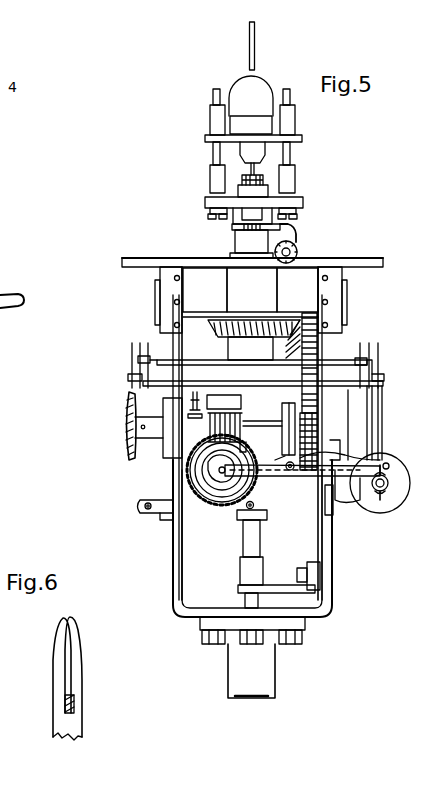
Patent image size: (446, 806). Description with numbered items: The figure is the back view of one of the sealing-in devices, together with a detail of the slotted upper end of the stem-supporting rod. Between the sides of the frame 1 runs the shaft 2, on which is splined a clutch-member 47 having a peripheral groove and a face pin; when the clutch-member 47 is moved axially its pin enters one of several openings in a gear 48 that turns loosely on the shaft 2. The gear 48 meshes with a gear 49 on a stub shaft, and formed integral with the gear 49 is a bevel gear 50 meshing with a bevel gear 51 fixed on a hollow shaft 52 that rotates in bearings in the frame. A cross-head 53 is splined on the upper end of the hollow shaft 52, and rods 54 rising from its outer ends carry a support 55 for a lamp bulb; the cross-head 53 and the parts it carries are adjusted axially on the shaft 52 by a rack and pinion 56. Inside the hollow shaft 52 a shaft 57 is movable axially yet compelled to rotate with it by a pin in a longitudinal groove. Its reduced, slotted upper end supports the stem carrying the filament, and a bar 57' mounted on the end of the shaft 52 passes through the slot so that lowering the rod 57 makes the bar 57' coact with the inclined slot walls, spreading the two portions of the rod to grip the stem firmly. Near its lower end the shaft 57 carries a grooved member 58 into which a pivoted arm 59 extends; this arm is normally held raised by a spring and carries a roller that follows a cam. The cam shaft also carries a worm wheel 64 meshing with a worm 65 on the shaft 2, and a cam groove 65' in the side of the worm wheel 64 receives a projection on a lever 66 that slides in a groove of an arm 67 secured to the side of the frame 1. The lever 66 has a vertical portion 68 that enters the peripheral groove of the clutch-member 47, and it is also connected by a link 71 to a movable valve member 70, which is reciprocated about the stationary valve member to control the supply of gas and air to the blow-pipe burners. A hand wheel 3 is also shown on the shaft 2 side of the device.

In FIG. 5, the frame 1 is at (173, 556).
In FIG. 5, the shaft 2 is at (188, 430).
In FIG. 5, the hand wheel 3 is at (127, 455).
In FIG. 5, the clutch-member 47 is at (282, 430).
In FIG. 5, the gear 48 is at (317, 432).
In FIG. 5, the gear 49 is at (317, 400).
In FIG. 5, the bevel gear 50 is at (290, 400).
In FIG. 5, the bevel gear 51 is at (213, 335).
In FIG. 5, the hollow shaft 52 is at (227, 372).
In FIG. 5, the cross-head 53 is at (238, 213).
In FIG. 5, the rods 54 is at (213, 152).
In FIG. 5, the support 55 is at (302, 138).
In FIG. 5, the rack and pinion 56 is at (296, 243).
In FIG. 5, the shaft 57 is at (231, 396).
In FIG. 6, the shaft 57 is at (88, 678).
In FIG. 5, the bar 57' is at (290, 182).
In FIG. 6, the bar 57' is at (97, 702).
In FIG. 5, the member 58 is at (262, 513).
In FIG. 5, the pivoted arm 59 is at (195, 492).
In FIG. 5, the worm wheel 64 is at (255, 485).
In FIG. 5, the worm 65 is at (221, 419).
In FIG. 5, the cam groove 65' is at (233, 496).
In FIG. 5, the lever 66 is at (282, 467).
In FIG. 5, the arm 67 is at (292, 520).
In FIG. 5, the vertical portion 68 is at (348, 460).
In FIG. 5, the movable valve member 70 is at (396, 498).
In FIG. 5, the link 71 is at (348, 505).